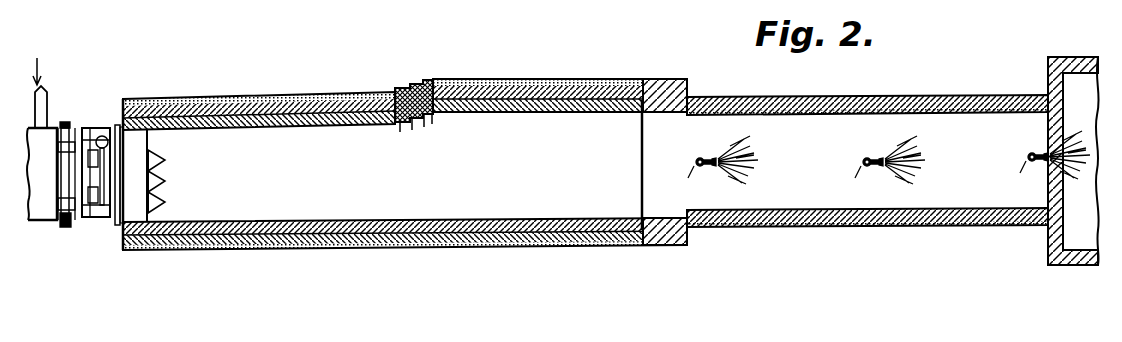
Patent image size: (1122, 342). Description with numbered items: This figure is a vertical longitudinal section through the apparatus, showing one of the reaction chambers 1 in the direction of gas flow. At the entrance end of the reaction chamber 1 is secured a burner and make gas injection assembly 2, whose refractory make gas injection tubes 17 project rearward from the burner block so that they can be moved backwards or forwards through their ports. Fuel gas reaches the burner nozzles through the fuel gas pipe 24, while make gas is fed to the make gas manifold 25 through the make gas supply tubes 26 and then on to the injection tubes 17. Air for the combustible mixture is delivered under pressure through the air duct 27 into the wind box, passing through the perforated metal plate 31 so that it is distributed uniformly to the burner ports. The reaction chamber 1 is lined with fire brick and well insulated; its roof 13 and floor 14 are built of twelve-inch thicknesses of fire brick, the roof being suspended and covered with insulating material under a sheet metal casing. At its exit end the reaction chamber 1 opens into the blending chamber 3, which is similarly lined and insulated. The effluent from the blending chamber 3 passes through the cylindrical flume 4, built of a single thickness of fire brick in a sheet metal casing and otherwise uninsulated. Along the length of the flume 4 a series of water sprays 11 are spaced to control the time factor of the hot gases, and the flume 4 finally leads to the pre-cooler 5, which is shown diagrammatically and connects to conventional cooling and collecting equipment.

The reaction chamber 1 is at (258, 136).
The burner and make gas injection assembly 2 is at (117, 125).
The blending chamber 3 is at (558, 123).
The flume 4 is at (871, 122).
The pre-cooler 5 is at (1077, 84).
The water sprays 11 is at (888, 164).
The roof 13 is at (332, 104).
The floor 14 is at (398, 233).
The make gas injection tubes 17 is at (153, 208).
The fuel gas pipe 24 is at (90, 129).
The make gas manifold 25 is at (96, 162).
The make gas supply tubes 26 is at (58, 162).
The air duct 27 is at (42, 94).
The perforated metal plate 31 is at (77, 127).